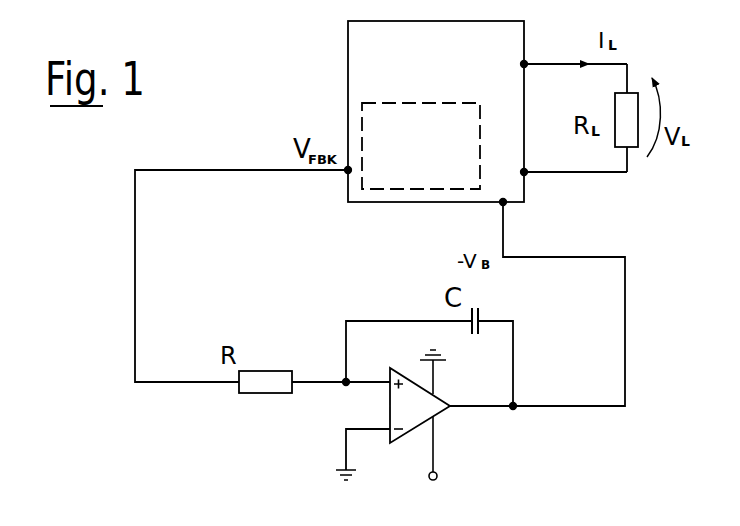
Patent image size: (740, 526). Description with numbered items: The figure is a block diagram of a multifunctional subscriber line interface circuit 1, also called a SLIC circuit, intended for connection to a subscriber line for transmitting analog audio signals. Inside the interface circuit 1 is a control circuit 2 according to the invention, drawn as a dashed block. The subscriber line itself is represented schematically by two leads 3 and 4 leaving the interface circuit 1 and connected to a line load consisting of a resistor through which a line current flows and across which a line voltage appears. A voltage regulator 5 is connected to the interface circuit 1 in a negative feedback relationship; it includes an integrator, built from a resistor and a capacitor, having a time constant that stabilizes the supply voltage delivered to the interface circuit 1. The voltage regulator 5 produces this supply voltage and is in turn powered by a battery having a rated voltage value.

The subscriber line interface circuit 1 is at (346, 77).
The control circuit 2 is at (431, 165).
The lead 3 is at (551, 64).
The lead 4 is at (556, 176).
The voltage regulator 5 is at (481, 416).